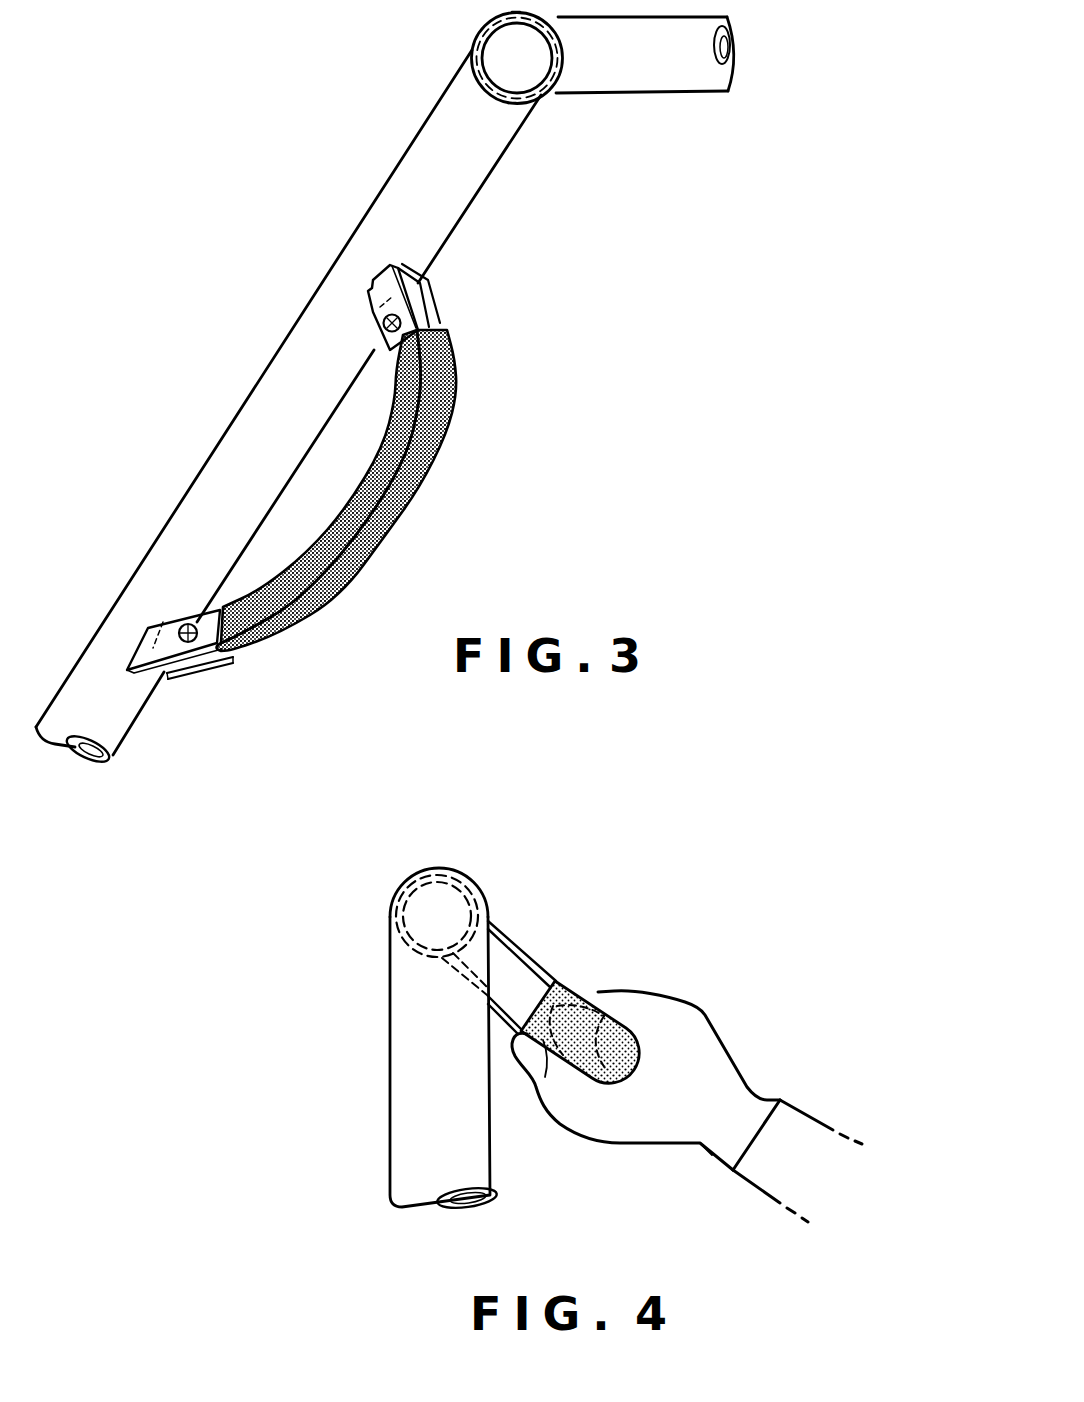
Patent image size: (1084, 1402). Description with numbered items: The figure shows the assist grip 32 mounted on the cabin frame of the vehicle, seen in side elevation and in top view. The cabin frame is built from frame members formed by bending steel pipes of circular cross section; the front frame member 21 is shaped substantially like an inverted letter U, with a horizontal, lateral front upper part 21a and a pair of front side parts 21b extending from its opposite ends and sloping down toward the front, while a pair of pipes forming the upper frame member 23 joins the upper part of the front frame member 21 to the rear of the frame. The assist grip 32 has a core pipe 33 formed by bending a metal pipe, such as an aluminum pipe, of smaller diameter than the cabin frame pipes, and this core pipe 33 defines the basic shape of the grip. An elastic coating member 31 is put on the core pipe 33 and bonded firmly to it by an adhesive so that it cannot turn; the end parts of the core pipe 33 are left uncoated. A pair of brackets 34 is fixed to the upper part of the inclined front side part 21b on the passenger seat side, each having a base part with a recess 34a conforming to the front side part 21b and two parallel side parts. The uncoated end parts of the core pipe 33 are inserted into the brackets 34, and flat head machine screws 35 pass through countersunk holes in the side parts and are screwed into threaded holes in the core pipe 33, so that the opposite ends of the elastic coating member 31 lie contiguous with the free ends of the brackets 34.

In FIG. 4, the front frame member 21 is at (390, 1097).
In FIG. 3, the front upper part 21a is at (483, 83).
In FIG. 3, the front side part 21b is at (243, 448).
In FIG. 4, the front side part 21b is at (390, 912).
In FIG. 3, the upper frame member 23 is at (645, 88).
In FIG. 3, the elastic coating member 31 is at (443, 440).
In FIG. 3, the assist grip 32 is at (429, 485).
In FIG. 4, the assist grip 32 is at (586, 994).
In FIG. 3, the core pipe 33 is at (563, 440).
In FIG. 4, the core pipe 33 is at (530, 968).
In FIG. 3, the bracket 34 is at (430, 293).
In FIG. 4, the bracket 34 is at (507, 927).
In FIG. 3, the recess 34a is at (373, 290).
In FIG. 3, the flat head machine screw 35 is at (173, 633).